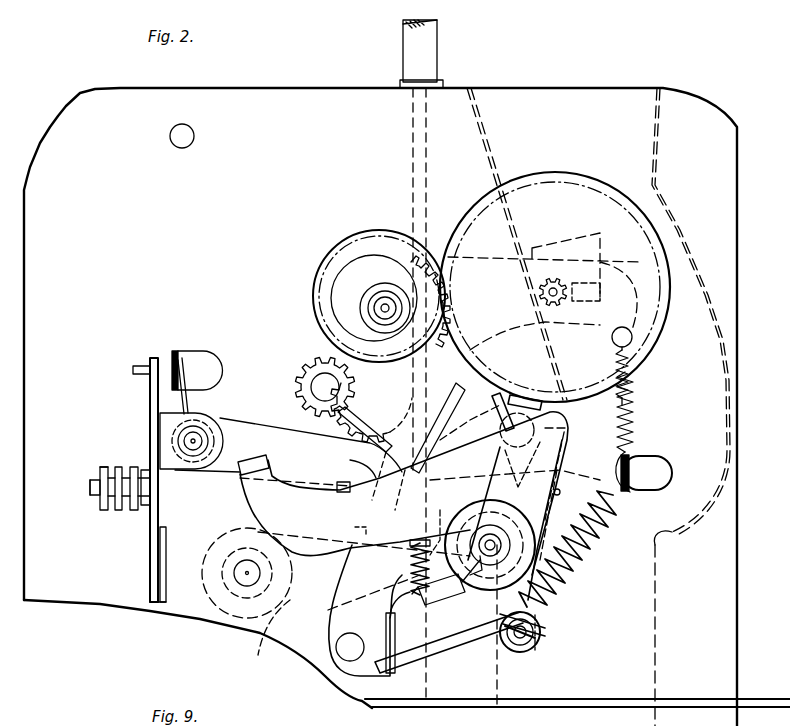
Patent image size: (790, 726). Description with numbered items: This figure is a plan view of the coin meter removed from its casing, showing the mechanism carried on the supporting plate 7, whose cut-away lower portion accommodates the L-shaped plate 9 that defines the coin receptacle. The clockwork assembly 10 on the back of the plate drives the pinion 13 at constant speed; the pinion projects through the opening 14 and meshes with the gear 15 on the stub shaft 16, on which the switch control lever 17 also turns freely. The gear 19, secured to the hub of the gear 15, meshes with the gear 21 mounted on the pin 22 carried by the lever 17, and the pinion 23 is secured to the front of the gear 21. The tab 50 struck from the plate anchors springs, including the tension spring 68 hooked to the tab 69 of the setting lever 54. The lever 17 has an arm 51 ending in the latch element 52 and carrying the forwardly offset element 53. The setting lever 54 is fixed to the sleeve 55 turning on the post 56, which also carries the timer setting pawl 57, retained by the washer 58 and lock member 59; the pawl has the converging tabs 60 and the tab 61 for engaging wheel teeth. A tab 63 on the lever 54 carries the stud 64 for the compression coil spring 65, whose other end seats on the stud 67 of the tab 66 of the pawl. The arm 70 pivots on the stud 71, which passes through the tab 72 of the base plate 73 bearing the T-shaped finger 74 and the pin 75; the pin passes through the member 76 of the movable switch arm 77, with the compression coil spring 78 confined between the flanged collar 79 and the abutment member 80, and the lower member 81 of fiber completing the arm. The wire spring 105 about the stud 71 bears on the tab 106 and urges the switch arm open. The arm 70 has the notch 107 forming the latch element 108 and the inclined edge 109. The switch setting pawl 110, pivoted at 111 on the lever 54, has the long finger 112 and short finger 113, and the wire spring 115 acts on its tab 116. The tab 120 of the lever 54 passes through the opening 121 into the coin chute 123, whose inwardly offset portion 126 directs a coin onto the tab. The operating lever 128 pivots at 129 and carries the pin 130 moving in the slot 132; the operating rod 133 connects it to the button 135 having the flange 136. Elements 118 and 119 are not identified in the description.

The supporting plate 7 is at (556, 102).
The plate 9 is at (457, 708).
The clockwork assembly 10 is at (500, 708).
The pinion 13 is at (297, 374).
The opening 14 is at (312, 362).
The gear 15 is at (318, 290).
The stub shaft 16 is at (372, 298).
The switch control lever 17 is at (472, 268).
The gear 19 is at (374, 245).
The gear 21 is at (562, 178).
The pin 22 is at (540, 300).
The pinion 23 is at (538, 292).
The tab 50 is at (635, 485).
The arm 51 is at (392, 452).
The latch element 52 is at (392, 488).
The forwardly offset element 53 is at (462, 404).
The setting lever 54 is at (470, 640).
The sleeve 55 is at (482, 512).
The post 56 is at (543, 496).
The timer setting pawl 57 is at (336, 552).
The washer 58 is at (515, 534).
The lock member 59 is at (470, 580).
The tabs 60 is at (522, 398).
The tab 61 is at (252, 462).
The tab 63 is at (396, 606).
The stud 64 is at (445, 584).
The compression coil spring 65 is at (455, 530).
The tab 66 is at (408, 552).
The stud 67 is at (411, 566).
The tension spring 68 is at (598, 550).
The tab 69 is at (514, 652).
The arm 70 is at (288, 448).
The stud 71 is at (182, 443).
The tab 72 is at (168, 422).
The base plate 73 is at (150, 388).
The T-shaped finger 74 is at (133, 370).
The pin 75 is at (90, 487).
The member 76 is at (150, 545).
The movable switch arm 77 is at (174, 591).
The compression coil spring 78 is at (114, 468).
The flanged collar 79 is at (140, 470).
The abutment member 80 is at (98, 478).
The lower member 81 is at (161, 608).
The wire spring 105 is at (190, 405).
The tab 106 is at (178, 354).
The notch 107 is at (362, 472).
The latch element 108 is at (372, 468).
The inclined edge 109 is at (338, 486).
The switch setting pawl 110 is at (338, 600).
The pivot 111 is at (345, 653).
The long finger 112 is at (446, 478).
The short finger 113 is at (362, 528).
The wire spring 115 is at (460, 640).
The tab 116 is at (386, 646).
The spring 118 is at (634, 420).
The spring 119 is at (636, 346).
The tab 120 is at (552, 620).
The opening 121 is at (528, 645).
The coin chute 123 is at (662, 610).
The inwardly offset portion 126 is at (662, 538).
The operating lever 128 is at (268, 640).
The pivot 129 is at (240, 566).
The pin 130 is at (540, 443).
The slot 132 is at (560, 491).
The operating rod 133 is at (413, 140).
The button 135 is at (403, 47).
The flange 136 is at (443, 83).